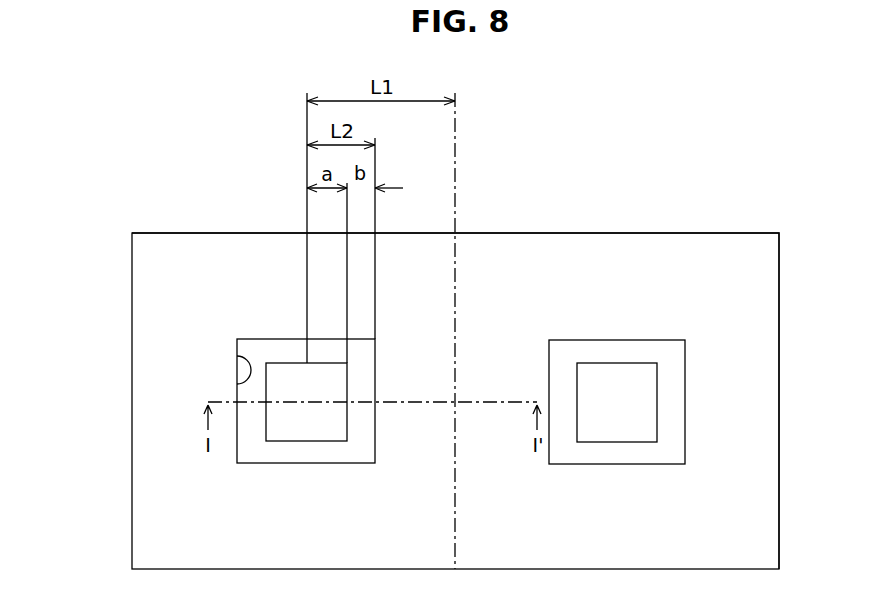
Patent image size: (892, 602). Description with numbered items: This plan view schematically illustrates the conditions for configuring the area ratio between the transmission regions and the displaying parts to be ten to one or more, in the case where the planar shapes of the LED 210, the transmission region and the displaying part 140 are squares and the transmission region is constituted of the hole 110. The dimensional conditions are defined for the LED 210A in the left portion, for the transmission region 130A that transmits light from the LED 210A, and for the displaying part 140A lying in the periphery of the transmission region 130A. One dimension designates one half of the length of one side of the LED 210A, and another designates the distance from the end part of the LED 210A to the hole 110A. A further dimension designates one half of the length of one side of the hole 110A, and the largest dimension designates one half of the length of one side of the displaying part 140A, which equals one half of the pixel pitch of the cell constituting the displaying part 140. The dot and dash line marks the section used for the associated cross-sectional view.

The displaying part 140A is at (148, 247).
The transmission region 130A is at (251, 348).
The LED 210A is at (290, 378).
The hole 110A is at (237, 358).
The LED 210 is at (611, 380).
The hole 110 is at (685, 370).
The displaying part 140 is at (752, 248).